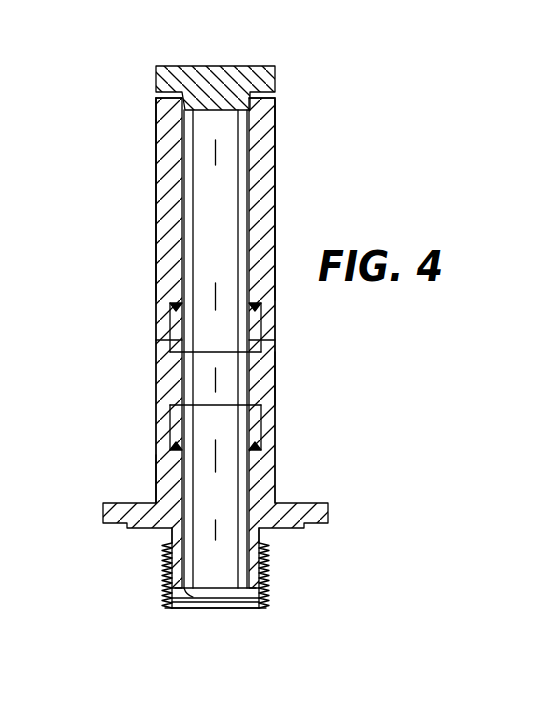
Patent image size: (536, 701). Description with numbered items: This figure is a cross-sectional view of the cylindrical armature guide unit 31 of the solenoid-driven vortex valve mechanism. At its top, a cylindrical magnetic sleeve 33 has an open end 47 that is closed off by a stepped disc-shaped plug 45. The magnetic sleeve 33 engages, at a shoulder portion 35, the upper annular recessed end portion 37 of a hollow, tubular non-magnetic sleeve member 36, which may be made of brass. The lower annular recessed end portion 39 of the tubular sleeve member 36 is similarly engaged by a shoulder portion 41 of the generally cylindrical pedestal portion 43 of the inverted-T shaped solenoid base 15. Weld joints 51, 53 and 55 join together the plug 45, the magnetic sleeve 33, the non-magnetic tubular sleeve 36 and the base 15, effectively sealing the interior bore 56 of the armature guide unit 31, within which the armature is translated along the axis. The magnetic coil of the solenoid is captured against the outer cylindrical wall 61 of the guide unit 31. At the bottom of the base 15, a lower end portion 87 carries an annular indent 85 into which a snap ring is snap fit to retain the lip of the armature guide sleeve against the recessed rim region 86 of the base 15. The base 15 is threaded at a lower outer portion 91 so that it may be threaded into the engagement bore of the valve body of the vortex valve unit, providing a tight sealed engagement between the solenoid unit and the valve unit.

The solenoid base 15 is at (276, 474).
The armature guide unit 31 is at (126, 366).
The magnetic sleeve 33 is at (276, 132).
The shoulder portion 35 is at (160, 340).
The tubular non-magnetic sleeve member 36 is at (276, 380).
The upper annular recessed end portion 37 is at (276, 345).
The lower annular recessed end portion 39 is at (276, 425).
The shoulder portion 41 is at (160, 425).
The pedestal portion 43 is at (156, 475).
The stepped disc-shaped plug 45 is at (246, 66).
The open end 47 is at (158, 103).
The weld joint 51 is at (152, 93).
The weld joint 53 is at (150, 309).
The weld joint 55 is at (150, 445).
The interior bore 56 is at (249, 203).
The outer cylindrical wall 61 is at (156, 212).
The annular indent 85 is at (172, 598).
The recessed rim region 86 is at (196, 590).
The lower end portion 87 is at (229, 618).
The threaded lower outer portion 91 is at (269, 578).